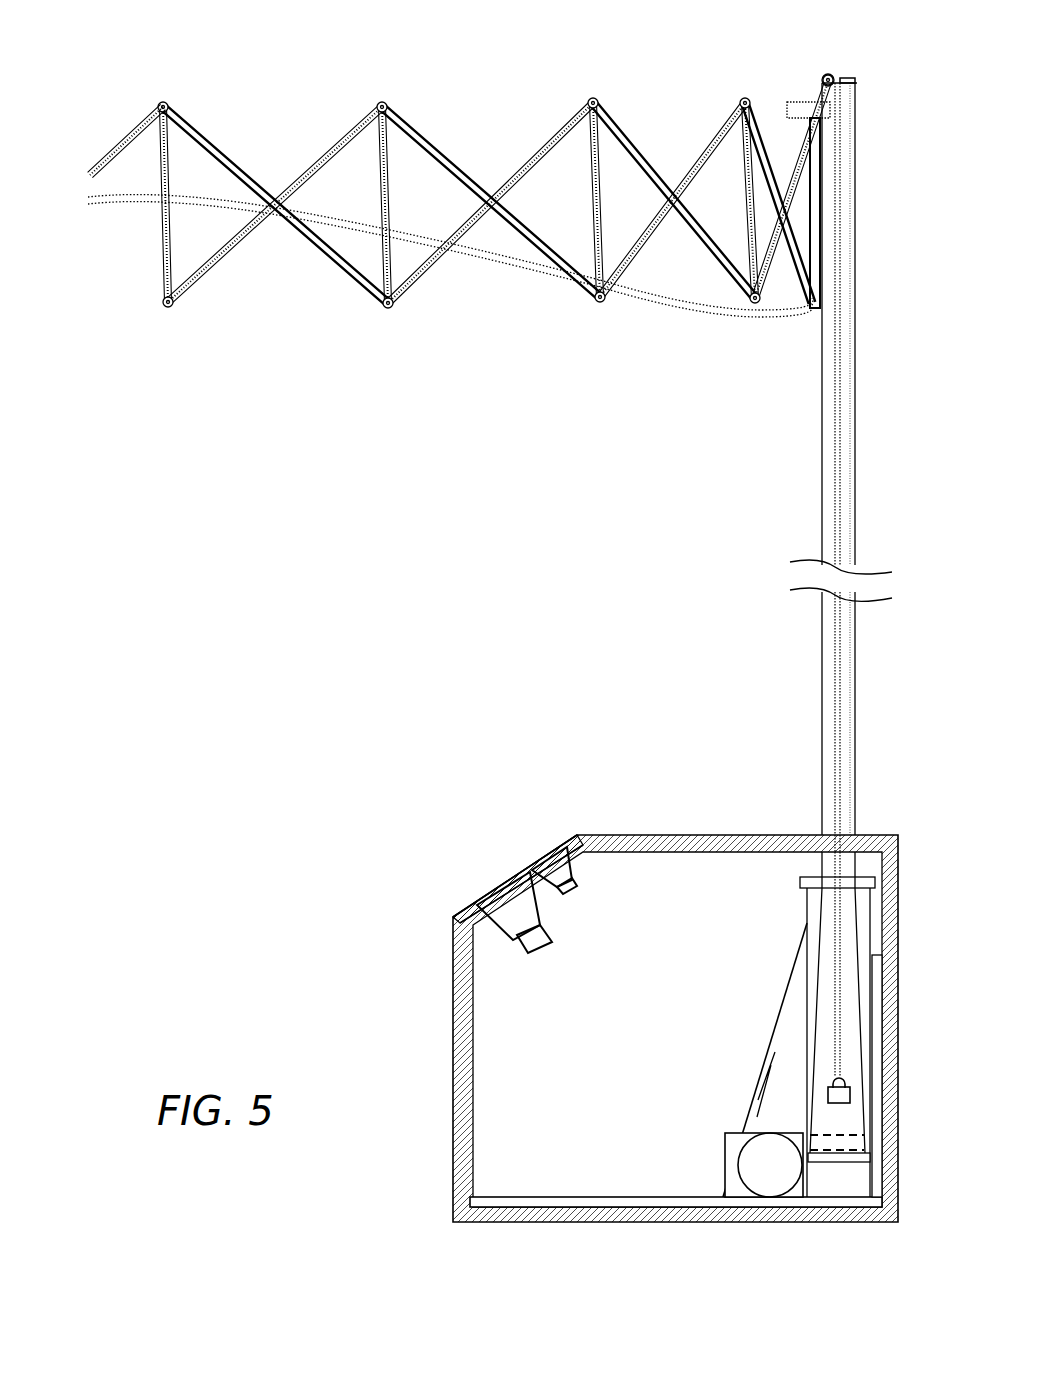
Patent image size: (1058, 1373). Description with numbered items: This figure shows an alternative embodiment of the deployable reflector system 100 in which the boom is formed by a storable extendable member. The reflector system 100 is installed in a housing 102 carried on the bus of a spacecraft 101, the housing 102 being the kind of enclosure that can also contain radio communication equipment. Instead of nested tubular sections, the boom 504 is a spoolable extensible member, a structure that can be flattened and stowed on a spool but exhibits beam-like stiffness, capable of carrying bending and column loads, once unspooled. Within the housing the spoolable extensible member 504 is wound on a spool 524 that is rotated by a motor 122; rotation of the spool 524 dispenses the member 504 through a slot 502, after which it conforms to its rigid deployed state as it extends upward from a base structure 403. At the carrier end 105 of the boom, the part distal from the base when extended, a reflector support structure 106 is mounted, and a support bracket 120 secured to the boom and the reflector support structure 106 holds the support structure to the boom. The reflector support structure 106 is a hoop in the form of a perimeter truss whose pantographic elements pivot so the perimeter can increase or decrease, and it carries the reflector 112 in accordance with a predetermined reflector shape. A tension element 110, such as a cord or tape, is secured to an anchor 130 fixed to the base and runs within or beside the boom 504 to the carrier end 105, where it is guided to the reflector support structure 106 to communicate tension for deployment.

The deployable reflector system 100 is at (906, 146).
The spacecraft 101 is at (625, 1028).
The housing 102 is at (457, 1078).
The carrier end 105 is at (858, 98).
The reflector support structure 106 is at (86, 301).
The tension element 110 is at (110, 151).
The reflector 112 is at (481, 249).
The support bracket 120 is at (786, 108).
The motor 122 is at (770, 1165).
The anchor 130 is at (843, 1095).
The base structure 403 is at (704, 1035).
The slot 502 is at (840, 1160).
The boom (spoolable extensible member) 504 is at (517, 577).
The spool 524 is at (735, 1137).